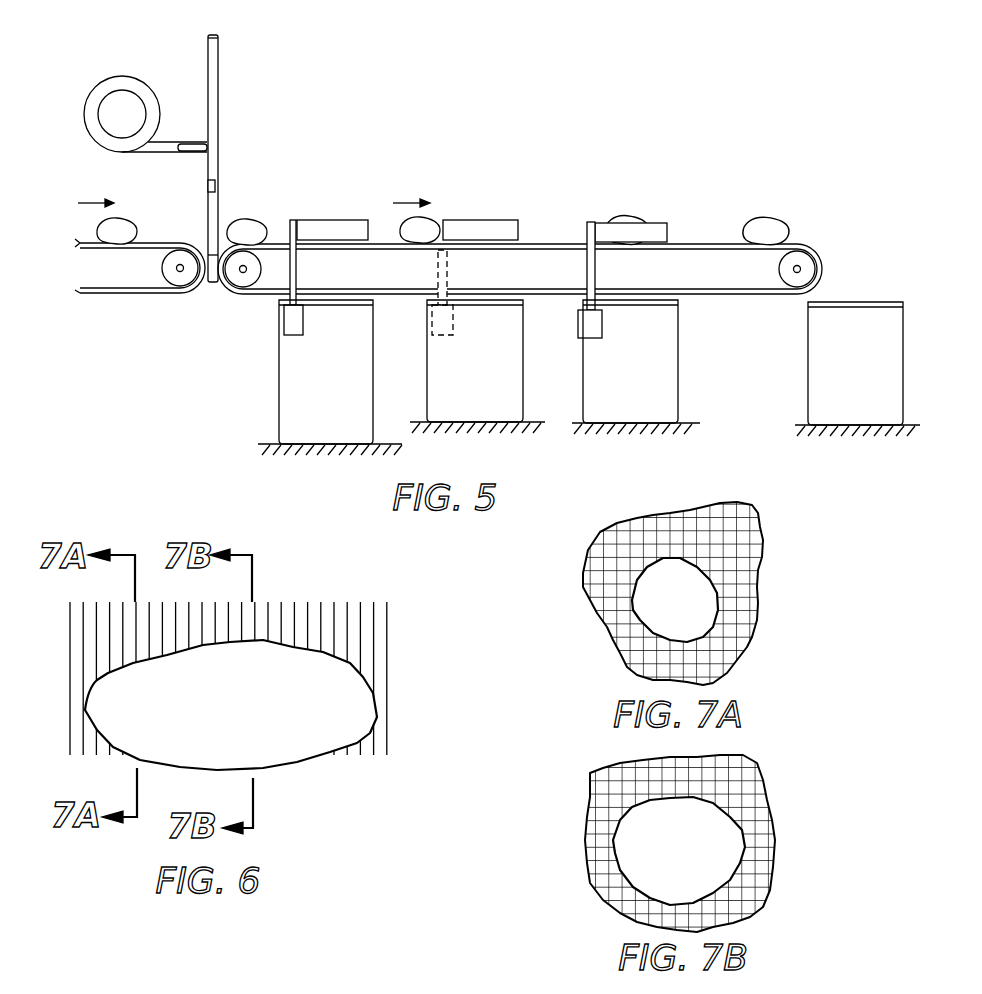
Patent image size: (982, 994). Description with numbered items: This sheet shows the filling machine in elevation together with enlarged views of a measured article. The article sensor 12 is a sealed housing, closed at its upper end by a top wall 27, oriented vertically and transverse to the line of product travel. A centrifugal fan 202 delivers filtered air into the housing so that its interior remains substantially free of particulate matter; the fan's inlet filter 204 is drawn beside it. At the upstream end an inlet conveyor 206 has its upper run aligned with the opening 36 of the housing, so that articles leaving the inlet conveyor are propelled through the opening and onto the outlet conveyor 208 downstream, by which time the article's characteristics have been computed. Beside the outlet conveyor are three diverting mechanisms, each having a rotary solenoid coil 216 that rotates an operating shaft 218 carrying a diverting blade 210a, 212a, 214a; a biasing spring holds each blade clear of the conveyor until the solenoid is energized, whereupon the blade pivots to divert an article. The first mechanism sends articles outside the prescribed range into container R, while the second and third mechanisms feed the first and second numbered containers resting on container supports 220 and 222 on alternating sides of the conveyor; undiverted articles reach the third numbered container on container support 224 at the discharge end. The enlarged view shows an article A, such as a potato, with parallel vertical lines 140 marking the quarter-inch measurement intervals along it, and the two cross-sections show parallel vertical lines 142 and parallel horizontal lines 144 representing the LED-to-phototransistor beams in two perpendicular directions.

In FIG. 5, the article sensor 12 is at (226, 128).
In FIG. 5, the top wall 27 is at (218, 37).
In FIG. 5, the opening 36 is at (222, 190).
In FIG. 5, the centrifugal fan 202 is at (157, 95).
In FIG. 5, the roll core 204 is at (107, 135).
In FIG. 5, the inlet conveyor 206 is at (130, 293).
In FIG. 5, the outlet conveyor 208 is at (707, 300).
In FIG. 5, the diverting blade 210a is at (332, 220).
In FIG. 5, the diverting blade 212a is at (488, 220).
In FIG. 5, the diverting blade 214a is at (653, 223).
In FIG. 5, the rotary solenoid coil 216 is at (303, 325).
In FIG. 5, the operating shaft 218 is at (297, 266).
In FIG. 5, the container R is at (279, 358).
In FIG. 5, the container support 220 is at (533, 416).
In FIG. 5, the second container support 222 is at (687, 420).
In FIG. 5, the container support 224 is at (803, 424).
In FIG. 6, the parallel vertical lines 140 is at (307, 602).
In FIG. 6, the article A is at (342, 750).
In FIG. 7A, the parallel vertical lines 142 is at (675, 513).
In FIG. 7A, the parallel horizontal lines 144 is at (762, 567).